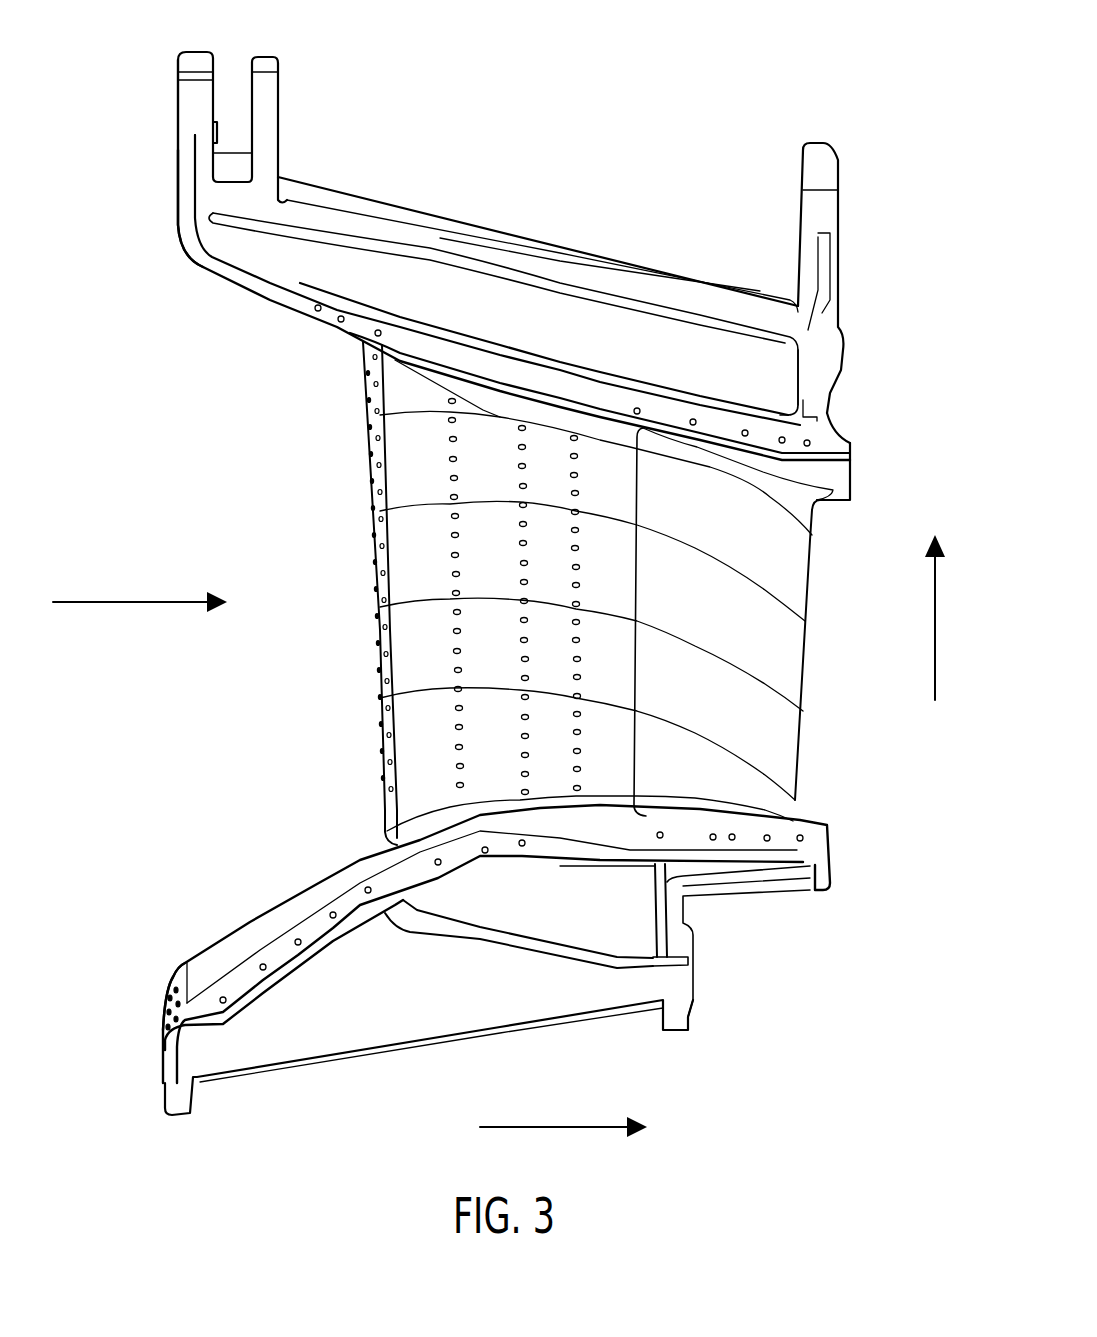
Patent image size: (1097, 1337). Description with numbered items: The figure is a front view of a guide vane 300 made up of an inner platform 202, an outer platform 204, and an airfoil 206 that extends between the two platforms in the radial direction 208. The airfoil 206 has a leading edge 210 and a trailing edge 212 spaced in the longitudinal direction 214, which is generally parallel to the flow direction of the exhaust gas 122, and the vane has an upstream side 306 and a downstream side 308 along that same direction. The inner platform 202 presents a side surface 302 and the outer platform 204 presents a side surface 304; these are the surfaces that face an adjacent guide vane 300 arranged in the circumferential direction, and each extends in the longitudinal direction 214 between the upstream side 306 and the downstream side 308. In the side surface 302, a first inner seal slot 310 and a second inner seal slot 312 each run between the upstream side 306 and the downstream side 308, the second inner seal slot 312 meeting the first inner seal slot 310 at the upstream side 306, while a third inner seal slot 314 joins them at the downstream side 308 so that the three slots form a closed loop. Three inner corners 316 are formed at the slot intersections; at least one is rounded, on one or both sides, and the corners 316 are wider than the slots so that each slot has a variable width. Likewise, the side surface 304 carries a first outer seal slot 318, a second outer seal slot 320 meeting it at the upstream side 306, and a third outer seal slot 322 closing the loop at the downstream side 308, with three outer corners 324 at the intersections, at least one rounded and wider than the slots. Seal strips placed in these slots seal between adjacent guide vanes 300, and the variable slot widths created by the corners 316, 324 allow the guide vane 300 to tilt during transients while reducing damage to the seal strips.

The exhaust gas 122 is at (142, 602).
The inner platform 202 is at (160, 1030).
The outer platform 204 is at (197, 240).
The airfoil 206 is at (381, 647).
The radial direction 208 is at (928, 606).
The leading edge 210 is at (373, 545).
The trailing edge 212 is at (806, 690).
The longitudinal direction 214 is at (558, 1125).
The guide vane 300 is at (742, 62).
The side surface of the inner platform 302 is at (265, 1045).
The side surface of the outer platform 304 is at (272, 292).
The upstream side 306 is at (125, 80).
The downstream side 308 is at (868, 176).
The first inner seal slot 310 is at (413, 885).
The second inner seal slot 312 is at (497, 943).
The third inner seal slot 314 is at (667, 907).
The inner corners 316 is at (650, 866).
The first outer seal slot 318 is at (487, 262).
The second outer seal slot 320 is at (335, 302).
The third outer seal slot 322 is at (807, 370).
The outer corners 324 is at (193, 212).